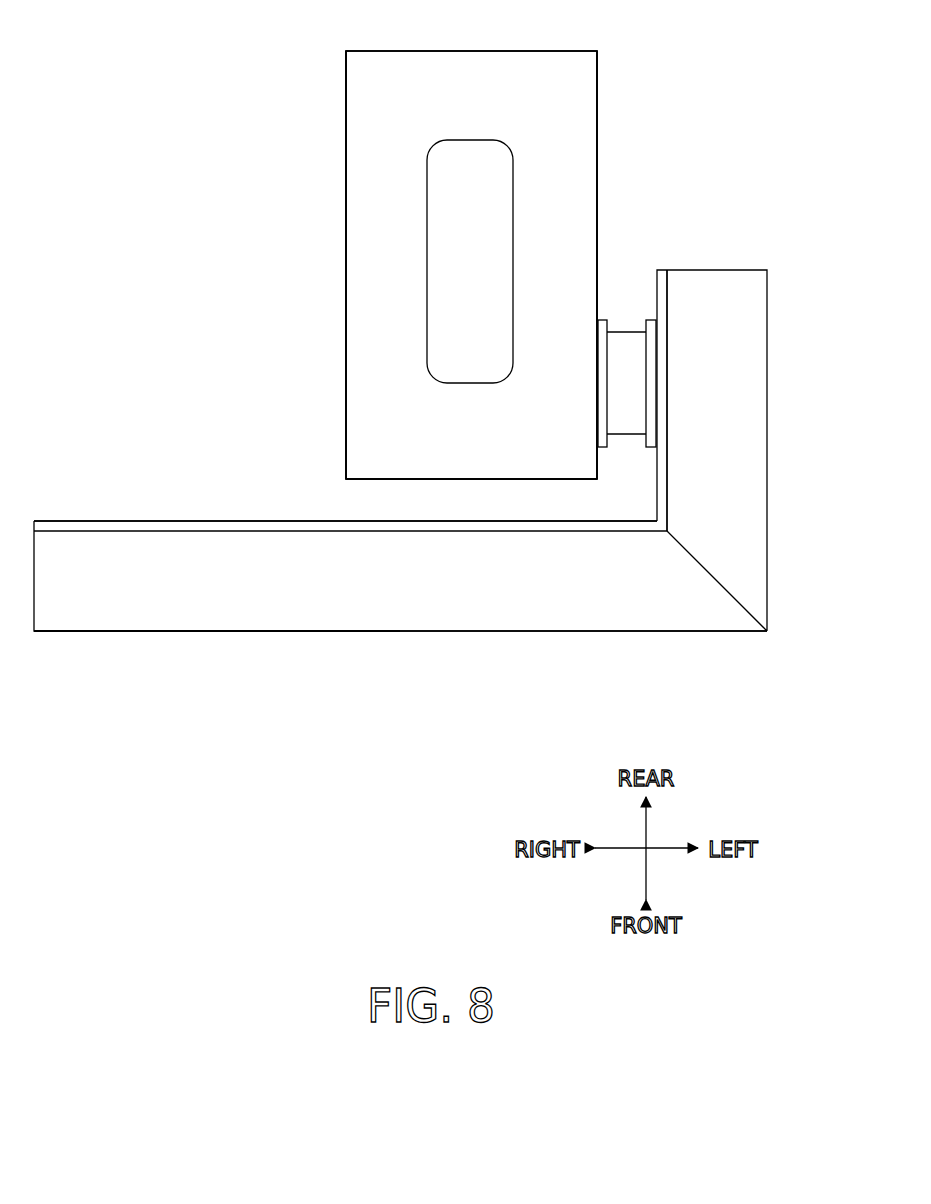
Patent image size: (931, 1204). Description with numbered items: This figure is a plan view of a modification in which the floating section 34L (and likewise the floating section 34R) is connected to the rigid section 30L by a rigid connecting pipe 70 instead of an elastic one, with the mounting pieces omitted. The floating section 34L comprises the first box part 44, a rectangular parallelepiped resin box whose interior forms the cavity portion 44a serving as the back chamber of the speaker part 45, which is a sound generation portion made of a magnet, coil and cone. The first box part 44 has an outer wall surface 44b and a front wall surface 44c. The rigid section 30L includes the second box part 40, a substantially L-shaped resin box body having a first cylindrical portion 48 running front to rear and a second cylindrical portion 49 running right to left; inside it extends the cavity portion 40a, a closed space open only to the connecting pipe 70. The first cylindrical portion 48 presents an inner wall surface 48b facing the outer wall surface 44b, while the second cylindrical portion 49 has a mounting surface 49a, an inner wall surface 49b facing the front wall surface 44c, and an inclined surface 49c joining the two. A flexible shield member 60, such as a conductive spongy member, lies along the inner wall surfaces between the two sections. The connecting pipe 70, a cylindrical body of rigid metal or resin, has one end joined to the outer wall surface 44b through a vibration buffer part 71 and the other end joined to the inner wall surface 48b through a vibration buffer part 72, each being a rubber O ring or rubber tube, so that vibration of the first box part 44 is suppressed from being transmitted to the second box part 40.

The floating section 34L is at (343, 103).
The floating section 34R is at (471, 265).
The first box part 44 is at (365, 264).
The cavity portion 44a is at (390, 338).
The outer wall surface 44b is at (597, 141).
The front wall surface 44c is at (472, 479).
The speaker part 45 is at (449, 210).
The second box part 40 is at (437, 508).
The cavity portion 40a is at (281, 605).
The first cylindrical portion 48 is at (753, 570).
The inner wall surface 48b is at (667, 478).
The second cylindrical portion 49 is at (668, 620).
The mounting surface 49a is at (360, 632).
The inner wall surface 49b is at (233, 527).
The inclined surface 49c is at (200, 613).
The shield member 60 is at (153, 525).
The connecting pipe 70 is at (683, 452).
The vibration buffer part 71 is at (600, 412).
The vibration buffer part 72 is at (650, 416).
The rigid section 30L is at (97, 634).